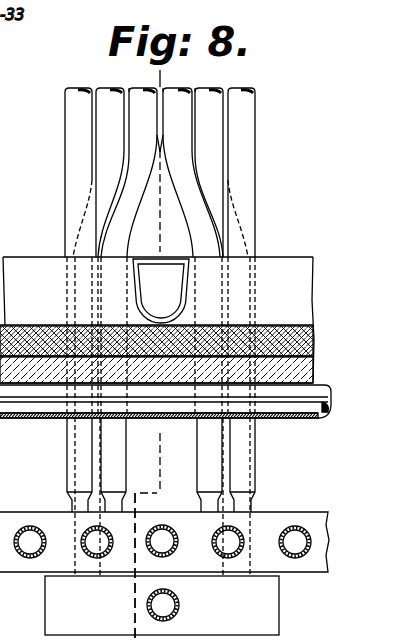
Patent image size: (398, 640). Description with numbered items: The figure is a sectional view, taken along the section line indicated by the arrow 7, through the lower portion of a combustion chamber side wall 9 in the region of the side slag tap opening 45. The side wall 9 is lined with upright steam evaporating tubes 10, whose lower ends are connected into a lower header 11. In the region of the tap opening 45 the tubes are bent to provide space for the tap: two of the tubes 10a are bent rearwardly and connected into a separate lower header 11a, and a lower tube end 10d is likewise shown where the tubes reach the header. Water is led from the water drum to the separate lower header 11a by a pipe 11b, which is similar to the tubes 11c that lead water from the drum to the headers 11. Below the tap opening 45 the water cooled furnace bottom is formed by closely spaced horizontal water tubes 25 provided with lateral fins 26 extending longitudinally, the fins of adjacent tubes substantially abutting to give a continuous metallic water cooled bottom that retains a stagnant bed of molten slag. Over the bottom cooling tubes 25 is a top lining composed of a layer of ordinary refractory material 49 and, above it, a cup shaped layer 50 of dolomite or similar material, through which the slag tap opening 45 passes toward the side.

The section line 7- 7 is at (176, 74).
The side wall 9 is at (257, 182).
The steam evaporating tube 10 is at (66, 128).
The bent tube 10a is at (96, 508).
The tube lower end 10d is at (222, 504).
The lower header 11 is at (297, 512).
The separate lower header 11a is at (270, 612).
The pipe 11b is at (179, 605).
The tube 11c is at (25, 548).
The water tube 25 is at (23, 405).
The fin 26 is at (156, 402).
The side slag tap opening 45 is at (172, 281).
The layer of refractory material 49 is at (307, 370).
The layer of dolomite 50 is at (300, 327).